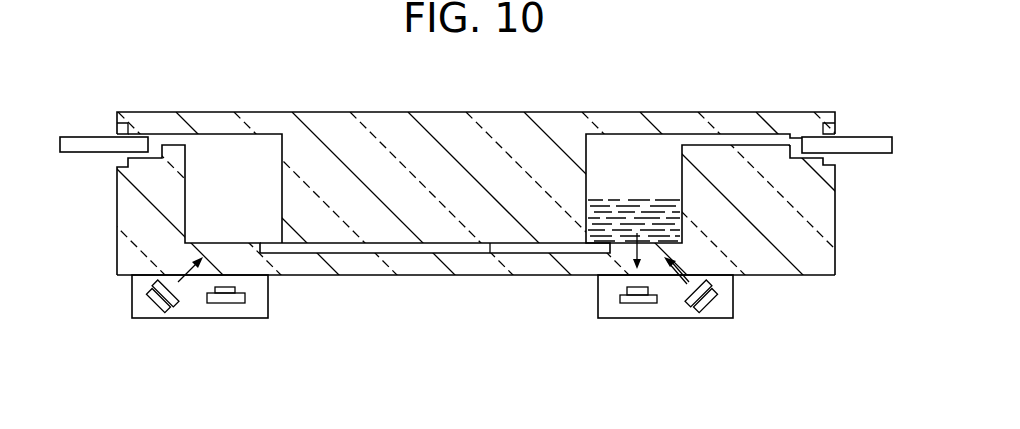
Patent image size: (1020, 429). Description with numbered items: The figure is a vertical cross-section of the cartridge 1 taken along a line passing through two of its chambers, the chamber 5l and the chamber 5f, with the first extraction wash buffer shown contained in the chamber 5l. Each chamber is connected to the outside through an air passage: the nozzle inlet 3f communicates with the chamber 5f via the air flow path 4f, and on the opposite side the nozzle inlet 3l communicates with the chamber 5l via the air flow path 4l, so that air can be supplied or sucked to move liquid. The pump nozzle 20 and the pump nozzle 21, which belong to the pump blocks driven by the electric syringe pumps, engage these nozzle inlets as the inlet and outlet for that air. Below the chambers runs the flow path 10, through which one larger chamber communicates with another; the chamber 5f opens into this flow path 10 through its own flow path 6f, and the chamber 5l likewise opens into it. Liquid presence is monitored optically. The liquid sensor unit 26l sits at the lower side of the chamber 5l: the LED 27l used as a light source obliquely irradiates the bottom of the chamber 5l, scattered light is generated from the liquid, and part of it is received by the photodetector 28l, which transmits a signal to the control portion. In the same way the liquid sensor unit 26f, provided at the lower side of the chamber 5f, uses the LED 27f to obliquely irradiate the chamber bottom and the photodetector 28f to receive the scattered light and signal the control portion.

The cartridge 1 is at (370, 113).
The nozzle inlet 3f is at (120, 131).
The nozzle inlet 3l is at (829, 131).
The air flow path 4f is at (177, 144).
The air flow path 4l is at (717, 140).
The chamber 5f is at (235, 150).
The chamber 5l is at (613, 148).
The flow path 6f is at (373, 252).
The flow path 10 is at (490, 253).
The pump nozzle 20 is at (78, 136).
The pump nozzle 21 is at (867, 137).
The liquid sensor unit 26f is at (195, 319).
The liquid sensor unit 26l is at (662, 319).
The LED 27f is at (163, 311).
The LED 27l is at (705, 306).
The photodetector 28f is at (236, 304).
The photodetector 28l is at (633, 304).